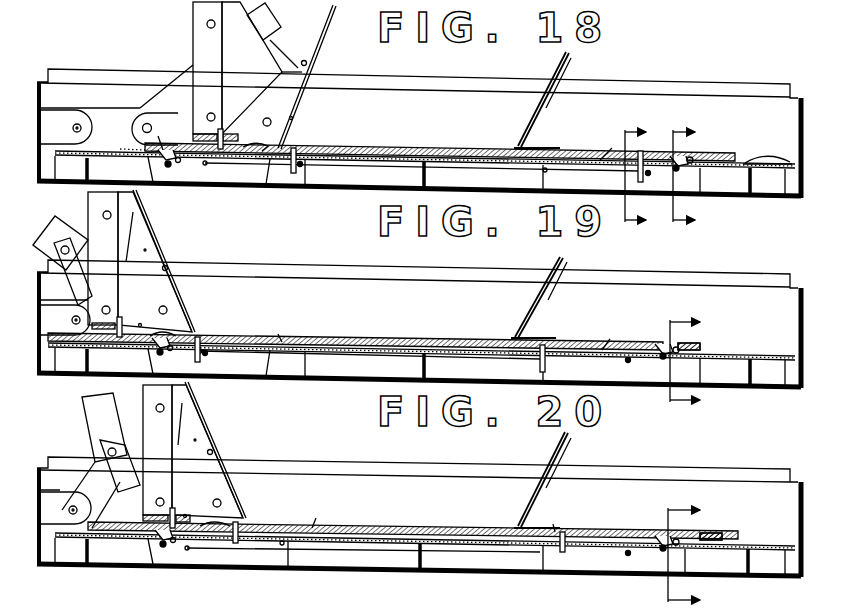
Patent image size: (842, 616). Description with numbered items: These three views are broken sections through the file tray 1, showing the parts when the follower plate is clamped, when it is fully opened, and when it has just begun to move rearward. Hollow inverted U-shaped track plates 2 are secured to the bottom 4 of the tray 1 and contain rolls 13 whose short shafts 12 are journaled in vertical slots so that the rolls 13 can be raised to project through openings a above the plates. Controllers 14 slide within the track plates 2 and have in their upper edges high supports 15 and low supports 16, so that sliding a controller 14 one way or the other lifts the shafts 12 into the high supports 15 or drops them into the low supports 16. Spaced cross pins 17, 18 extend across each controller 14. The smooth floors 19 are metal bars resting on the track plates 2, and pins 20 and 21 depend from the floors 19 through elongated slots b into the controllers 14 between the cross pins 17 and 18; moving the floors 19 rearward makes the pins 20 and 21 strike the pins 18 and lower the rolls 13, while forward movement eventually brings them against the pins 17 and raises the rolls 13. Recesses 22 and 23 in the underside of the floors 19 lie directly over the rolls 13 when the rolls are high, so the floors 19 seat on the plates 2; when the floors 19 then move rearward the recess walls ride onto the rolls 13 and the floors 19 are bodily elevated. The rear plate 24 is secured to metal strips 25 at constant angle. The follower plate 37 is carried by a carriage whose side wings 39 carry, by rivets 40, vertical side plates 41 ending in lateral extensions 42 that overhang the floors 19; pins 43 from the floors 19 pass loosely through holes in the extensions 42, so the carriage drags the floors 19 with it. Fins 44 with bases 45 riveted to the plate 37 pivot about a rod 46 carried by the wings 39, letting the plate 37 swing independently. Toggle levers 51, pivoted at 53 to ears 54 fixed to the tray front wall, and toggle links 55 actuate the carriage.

In FIG. 18, the tray 1 is at (402, 82).
In FIG. 19, the tray 1 is at (419, 316).
In FIG. 20, the tray 1 is at (403, 468).
In FIG. 18, the hollow elongated track plates 2 is at (370, 160).
In FIG. 19, the hollow elongated track plates 2 is at (421, 349).
In FIG. 20, the hollow elongated track plates 2 is at (425, 525).
In FIG. 18, the bottom of the tray 4 is at (370, 189).
In FIG. 19, the bottom of the tray 4 is at (419, 375).
In FIG. 20, the bottom of the tray 4 is at (419, 563).
In FIG. 18, the short shafts 12 is at (165, 161).
In FIG. 19, the short shafts 12 is at (412, 330).
In FIG. 20, the short shafts 12 is at (390, 531).
In FIG. 18, the rolls 13 is at (162, 150).
In FIG. 19, the rolls 13 is at (420, 331).
In FIG. 20, the rolls 13 is at (417, 524).
In FIG. 18, the controllers 14 is at (420, 175).
In FIG. 19, the controllers 14 is at (420, 367).
In FIG. 20, the controllers 14 is at (420, 557).
In FIG. 18, the high supports 15 is at (180, 163).
In FIG. 19, the high supports 15 is at (443, 360).
In FIG. 20, the high supports 15 is at (444, 553).
In FIG. 18, the low supports 16 is at (168, 167).
In FIG. 19, the low supports 16 is at (399, 366).
In FIG. 20, the low supports 16 is at (396, 567).
In FIG. 18, the cross pins 17 is at (208, 164).
In FIG. 19, the cross pins 17 is at (369, 340).
In FIG. 20, the cross pins 17 is at (365, 552).
In FIG. 18, the cross pins 18 is at (303, 165).
In FIG. 19, the cross pins 18 is at (417, 365).
In FIG. 20, the cross pins 18 is at (455, 552).
In FIG. 18, the smooth floors 19 is at (432, 150).
In FIG. 19, the smooth floors 19 is at (355, 334).
In FIG. 20, the smooth floors 19 is at (413, 520).
In FIG. 18, the pin 20 is at (283, 160).
In FIG. 19, the pin 20 is at (212, 350).
In FIG. 20, the pin 20 is at (266, 526).
In FIG. 18, the pin 21 is at (636, 174).
In FIG. 19, the pin 21 is at (520, 365).
In FIG. 20, the pin 21 is at (588, 530).
In FIG. 18, the recess 22 is at (285, 149).
In FIG. 19, the recess 22 is at (425, 358).
In FIG. 20, the recess 22 is at (214, 514).
In FIG. 18, the recess 23 is at (770, 154).
In FIG. 19, the recess 23 is at (703, 337).
In FIG. 20, the recess 23 is at (714, 551).
In FIG. 18, the rear plate 24 is at (560, 66).
In FIG. 19, the rear plate 24 is at (526, 297).
In FIG. 20, the rear plate 24 is at (532, 480).
In FIG. 18, the metal strips 25 is at (552, 100).
In FIG. 19, the metal strips 25 is at (564, 286).
In FIG. 20, the metal strips 25 is at (563, 467).
In FIG. 18, the front or follower plate 37 is at (326, 33).
In FIG. 19, the front or follower plate 37 is at (148, 216).
In FIG. 20, the front or follower plate 37 is at (215, 450).
In FIG. 18, the vertical side wings 39 is at (252, 68).
In FIG. 19, the vertical side wings 39 is at (145, 262).
In FIG. 20, the vertical side wings 39 is at (182, 423).
In FIG. 18, the rivets 40 is at (207, 23).
In FIG. 19, the rivets 40 is at (104, 212).
In FIG. 20, the rivets 40 is at (156, 406).
In FIG. 18, the vertical side plates 41 is at (207, 68).
In FIG. 19, the vertical side plates 41 is at (103, 258).
In FIG. 20, the vertical side plates 41 is at (157, 450).
In FIG. 18, the lateral extensions 42 is at (264, 121).
In FIG. 19, the lateral extensions 42 is at (141, 323).
In FIG. 20, the lateral extensions 42 is at (186, 514).
In FIG. 18, the pins 43 is at (222, 129).
In FIG. 19, the pins 43 is at (121, 317).
In FIG. 20, the pins 43 is at (175, 508).
In FIG. 18, the fins 44 is at (282, 86).
In FIG. 19, the fins 44 is at (145, 250).
In FIG. 20, the fins 44 is at (195, 440).
In FIG. 18, the bases 45 is at (307, 64).
In FIG. 19, the bases 45 is at (168, 268).
In FIG. 20, the bases 45 is at (213, 452).
In FIG. 18, the rod 46 is at (293, 118).
In FIG. 19, the rod 46 is at (167, 308).
In FIG. 20, the rod 46 is at (220, 500).
In FIG. 18, the toggle levers 51 is at (167, 72).
In FIG. 19, the toggle levers 51 is at (67, 232).
In FIG. 20, the toggle levers 51 is at (92, 439).
In FIG. 18, the pivot 53 is at (77, 124).
In FIG. 19, the pivot 53 is at (76, 316).
In FIG. 20, the pivot 53 is at (72, 506).
In FIG. 18, the ears 54 is at (64, 128).
In FIG. 19, the ears 54 is at (62, 321).
In FIG. 20, the ears 54 is at (58, 511).
In FIG. 18, the toggle links 55 is at (155, 126).
In FIG. 19, the toggle links 55 is at (73, 271).
In FIG. 20, the toggle links 55 is at (120, 466).
In FIG. 18, the openings a is at (405, 135).
In FIG. 18, the elongated slots b is at (435, 142).
In FIG. 19, the elongated slots b is at (445, 335).
In FIG. 20, the elongated slots b is at (435, 518).